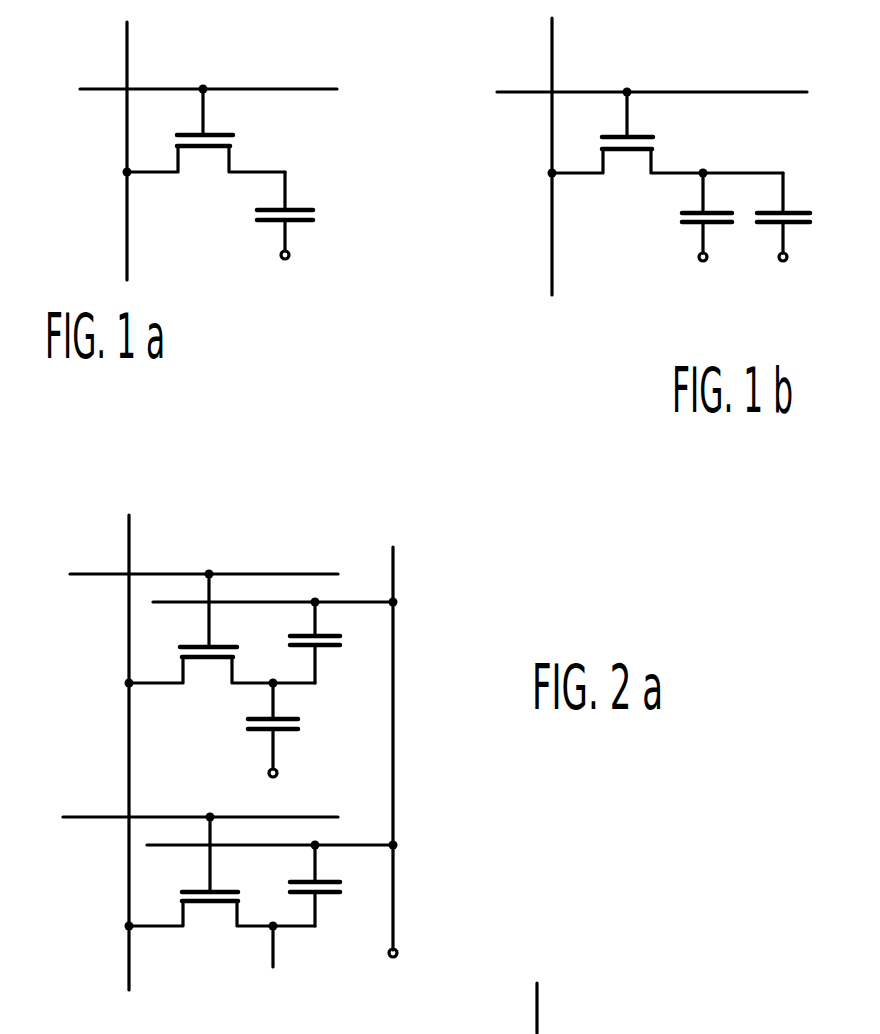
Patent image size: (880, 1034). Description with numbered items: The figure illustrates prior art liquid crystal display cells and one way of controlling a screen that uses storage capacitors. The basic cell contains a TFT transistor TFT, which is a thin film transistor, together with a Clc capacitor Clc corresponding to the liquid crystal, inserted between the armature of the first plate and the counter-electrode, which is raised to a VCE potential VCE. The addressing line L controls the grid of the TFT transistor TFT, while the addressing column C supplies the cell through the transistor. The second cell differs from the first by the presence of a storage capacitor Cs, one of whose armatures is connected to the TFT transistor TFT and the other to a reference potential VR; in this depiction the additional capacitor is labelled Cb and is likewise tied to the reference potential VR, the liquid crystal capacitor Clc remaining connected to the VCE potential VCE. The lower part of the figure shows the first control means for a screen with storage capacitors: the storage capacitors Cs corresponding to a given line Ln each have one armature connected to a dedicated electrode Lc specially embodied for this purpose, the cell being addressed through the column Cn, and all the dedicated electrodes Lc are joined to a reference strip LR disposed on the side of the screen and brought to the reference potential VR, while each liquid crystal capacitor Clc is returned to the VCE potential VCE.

In FIG. 1A, the addressing column C is at (128, 36).
In FIG. 1B, the addressing column C is at (553, 34).
In FIG. 1A, the addressing line L is at (88, 88).
In FIG. 1B, the addressing line L is at (514, 90).
In FIG. 1A, the TFT transistor TFT is at (240, 141).
In FIG. 1B, the TFT transistor TFT is at (661, 141).
In FIG. 2A, the TFT transistor TFT is at (173, 650).
In FIG. 1A, the Clc capacitor Clc is at (268, 228).
In FIG. 1B, the Clc capacitor Clc is at (690, 228).
In FIG. 2A, the Clc capacitor Clc is at (290, 732).
In FIG. 1B, the storage capacitor Cb is at (798, 212).
In FIG. 1A, the VCE potential VCE is at (300, 278).
In FIG. 1B, the VCE potential VCE is at (712, 279).
In FIG. 2A, the VCE potential VCE is at (281, 791).
In FIG. 1B, the reference potential VR is at (787, 279).
In FIG. 2A, the reference potential VR is at (397, 972).
In FIG. 2A, the column line n Cn is at (130, 530).
In FIG. 2A, the line Ln is at (84, 573).
In FIG. 2A, the dedicated electrode Lc is at (360, 602).
In FIG. 2A, the reference strip LR is at (394, 558).
In FIG. 2A, the storage capacitor Cs is at (332, 648).